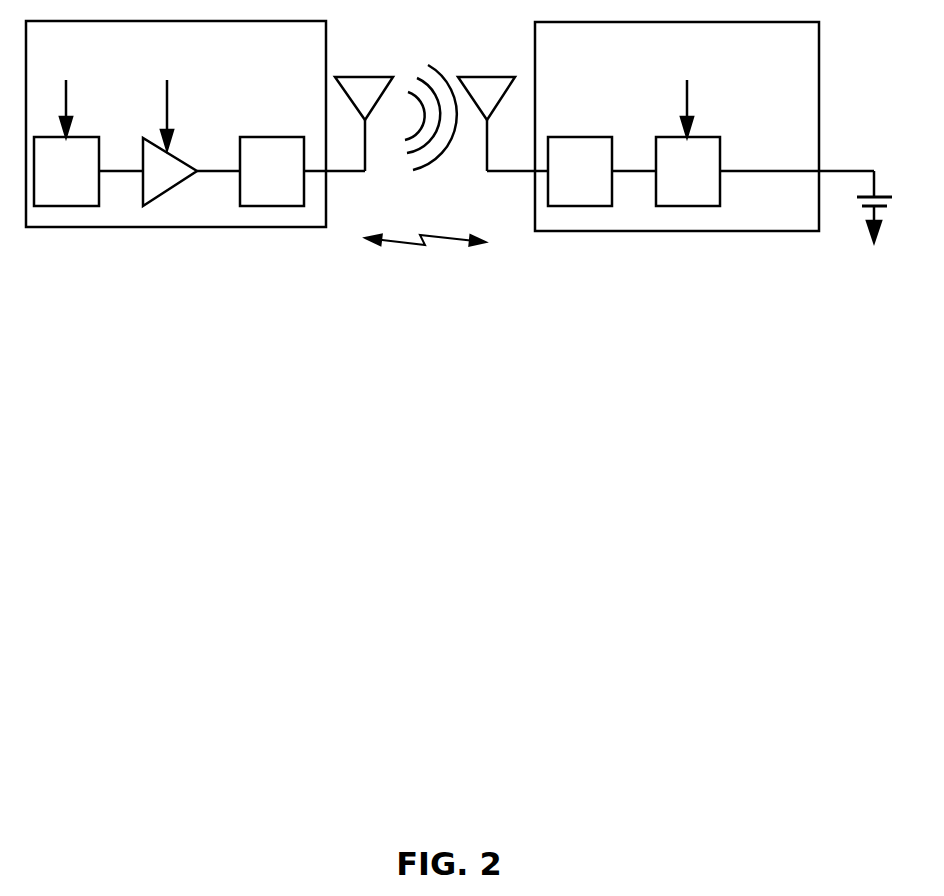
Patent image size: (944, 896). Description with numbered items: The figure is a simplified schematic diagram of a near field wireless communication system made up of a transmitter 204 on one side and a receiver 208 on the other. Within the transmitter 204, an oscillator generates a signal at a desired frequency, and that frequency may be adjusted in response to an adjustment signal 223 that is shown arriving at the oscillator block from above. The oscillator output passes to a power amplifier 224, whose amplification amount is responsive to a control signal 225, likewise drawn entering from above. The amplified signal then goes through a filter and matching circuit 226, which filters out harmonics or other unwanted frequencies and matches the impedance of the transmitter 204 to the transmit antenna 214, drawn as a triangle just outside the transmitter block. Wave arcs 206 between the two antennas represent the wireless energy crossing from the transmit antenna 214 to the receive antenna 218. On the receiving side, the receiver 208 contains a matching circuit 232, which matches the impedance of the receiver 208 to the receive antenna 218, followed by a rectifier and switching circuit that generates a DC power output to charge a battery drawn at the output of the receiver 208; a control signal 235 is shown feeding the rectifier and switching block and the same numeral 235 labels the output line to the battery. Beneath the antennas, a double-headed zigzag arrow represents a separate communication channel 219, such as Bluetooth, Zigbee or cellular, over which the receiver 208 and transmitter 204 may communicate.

The transmitter 204 is at (159, 53).
The transmit antenna 214 is at (83, 195).
The adjustment signal 223 is at (66, 97).
The power amplifier 224 is at (148, 180).
The control signal 225 is at (167, 97).
The filter and matching circuit 226 is at (289, 183).
The wireless power field 206 is at (433, 176).
The receive antenna 218 is at (502, 77).
The communication channel 219 is at (428, 266).
The receiver 208 is at (660, 55).
The matching circuit 232 is at (597, 183).
The rectifier switching control / output 235 is at (687, 97).